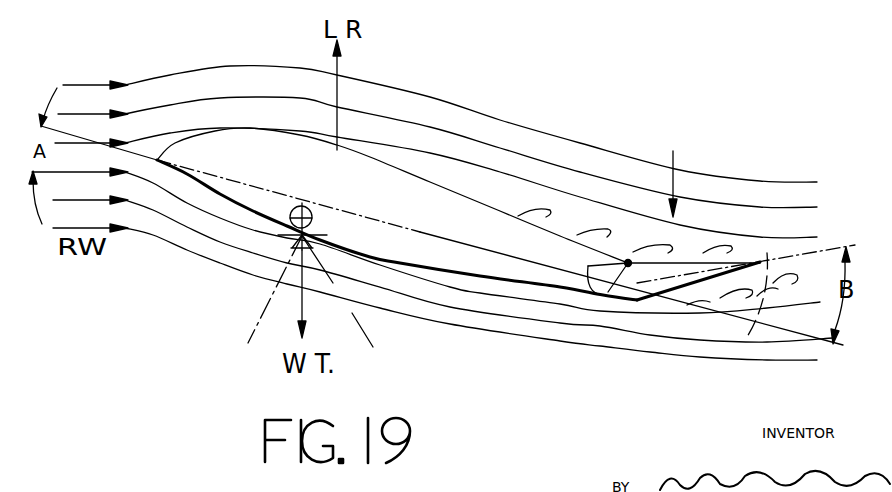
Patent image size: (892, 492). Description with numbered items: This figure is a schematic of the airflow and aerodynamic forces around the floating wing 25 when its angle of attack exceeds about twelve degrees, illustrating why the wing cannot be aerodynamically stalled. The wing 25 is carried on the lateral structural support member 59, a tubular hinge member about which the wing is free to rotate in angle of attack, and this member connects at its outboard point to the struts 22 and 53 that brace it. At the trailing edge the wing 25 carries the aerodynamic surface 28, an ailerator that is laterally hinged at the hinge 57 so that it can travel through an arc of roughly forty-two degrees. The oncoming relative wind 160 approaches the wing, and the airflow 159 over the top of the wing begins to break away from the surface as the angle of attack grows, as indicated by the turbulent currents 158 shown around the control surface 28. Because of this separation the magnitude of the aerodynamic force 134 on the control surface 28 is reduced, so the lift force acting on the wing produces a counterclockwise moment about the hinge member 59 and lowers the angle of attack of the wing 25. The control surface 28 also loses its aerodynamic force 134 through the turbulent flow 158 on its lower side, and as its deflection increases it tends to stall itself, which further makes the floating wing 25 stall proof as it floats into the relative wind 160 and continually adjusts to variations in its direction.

The relative wind 160 is at (63, 179).
The airflow 159 is at (740, 361).
The wing 25 is at (395, 186).
The trailing edge aerodynamic surface 28 is at (608, 292).
The hinge 57 is at (625, 262).
The aerodynamic force 134 is at (677, 161).
The lateral structural support member 59 is at (327, 234).
The strut 22 is at (257, 317).
The strut 53 is at (368, 335).
The turbulent currents 158 is at (594, 235).